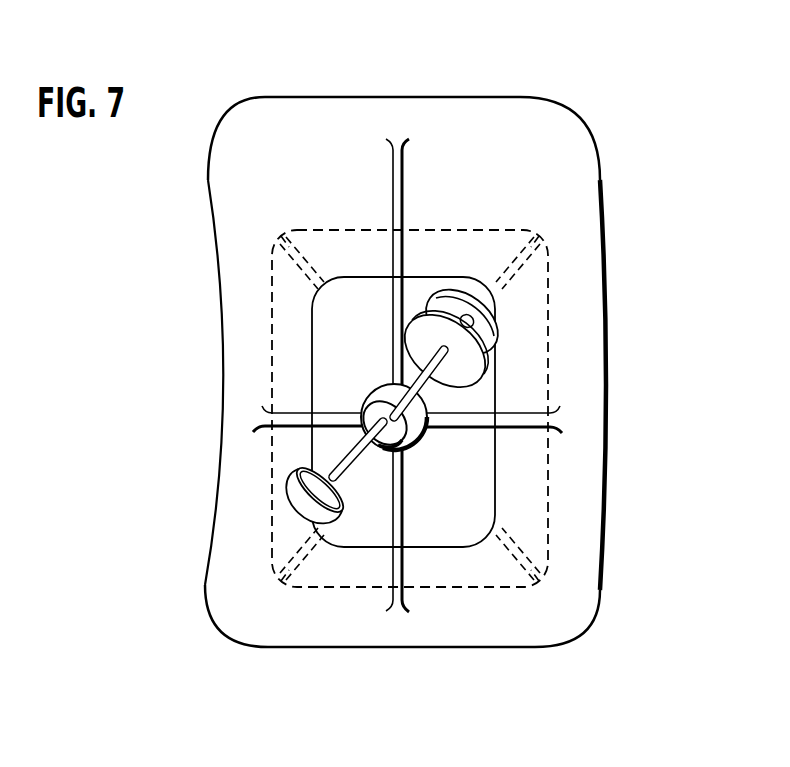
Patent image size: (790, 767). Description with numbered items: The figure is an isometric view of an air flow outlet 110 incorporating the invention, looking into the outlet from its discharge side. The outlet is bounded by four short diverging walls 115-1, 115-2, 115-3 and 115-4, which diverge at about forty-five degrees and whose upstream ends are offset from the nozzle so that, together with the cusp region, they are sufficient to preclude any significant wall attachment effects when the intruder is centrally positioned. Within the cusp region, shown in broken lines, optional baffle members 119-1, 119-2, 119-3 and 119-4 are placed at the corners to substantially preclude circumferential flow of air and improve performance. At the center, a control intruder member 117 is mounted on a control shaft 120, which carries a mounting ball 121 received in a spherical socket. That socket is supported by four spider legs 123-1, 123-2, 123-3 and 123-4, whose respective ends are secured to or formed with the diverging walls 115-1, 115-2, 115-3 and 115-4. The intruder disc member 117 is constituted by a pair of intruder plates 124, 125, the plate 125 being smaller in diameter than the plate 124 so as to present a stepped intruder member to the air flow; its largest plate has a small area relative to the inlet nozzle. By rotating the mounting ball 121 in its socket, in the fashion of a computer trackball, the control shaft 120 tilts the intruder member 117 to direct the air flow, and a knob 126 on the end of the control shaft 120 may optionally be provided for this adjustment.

The air flow outlet 110 is at (412, 348).
The diverging wall 115-1 is at (527, 123).
The diverging wall 115-2 is at (583, 368).
The diverging wall 115-3 is at (335, 630).
The diverging wall 115-4 is at (285, 338).
The control intruder member 117 is at (423, 284).
The baffle member 119-1 is at (272, 268).
The baffle member 119-2 is at (548, 270).
The baffle member 119-3 is at (518, 556).
The baffle member 119-4 is at (270, 560).
The control shaft 120 is at (357, 450).
The mounting ball 121 is at (372, 388).
The spider leg 123-1 is at (393, 163).
The spider leg 123-2 is at (460, 425).
The spider leg 123-3 is at (398, 516).
The spider leg 123-4 is at (294, 430).
The intruder plate 124 is at (468, 368).
The intruder plate 125 is at (488, 318).
The end cap 126 is at (292, 502).